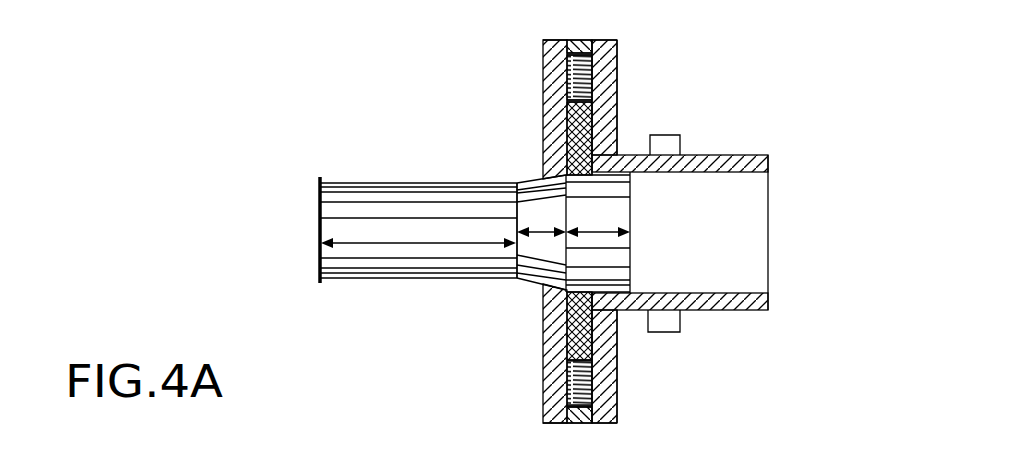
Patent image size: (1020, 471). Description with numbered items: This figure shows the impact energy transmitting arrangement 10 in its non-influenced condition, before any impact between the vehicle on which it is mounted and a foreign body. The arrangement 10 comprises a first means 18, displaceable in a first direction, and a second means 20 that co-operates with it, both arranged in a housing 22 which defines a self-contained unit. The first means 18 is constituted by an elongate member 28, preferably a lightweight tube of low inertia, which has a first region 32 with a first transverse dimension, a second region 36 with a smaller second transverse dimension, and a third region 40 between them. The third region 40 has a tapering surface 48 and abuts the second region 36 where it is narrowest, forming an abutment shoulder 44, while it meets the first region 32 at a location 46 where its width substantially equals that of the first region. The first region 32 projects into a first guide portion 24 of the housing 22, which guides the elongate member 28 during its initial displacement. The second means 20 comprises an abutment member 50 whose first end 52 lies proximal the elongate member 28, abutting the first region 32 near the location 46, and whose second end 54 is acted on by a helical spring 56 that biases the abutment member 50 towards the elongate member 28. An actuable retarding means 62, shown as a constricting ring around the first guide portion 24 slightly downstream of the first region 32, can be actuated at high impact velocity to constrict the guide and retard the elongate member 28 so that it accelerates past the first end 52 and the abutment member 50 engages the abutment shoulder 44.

The impact energy transmitting arrangement 10 is at (206, 129).
The first means 18 is at (312, 262).
The second means 20 is at (557, 119).
The housing 22 is at (623, 399).
The first guide portion 24 is at (733, 155).
The elongate member 28 is at (383, 188).
The first region 32 is at (617, 215).
The second region 36 is at (418, 230).
The third region 40 is at (510, 229).
The abutment shoulder 44 is at (517, 180).
The location 46 is at (543, 262).
The surface 48 is at (539, 181).
The abutment member 50 is at (618, 152).
The first end 52 is at (618, 312).
The second end 54 is at (607, 89).
The helical spring 56 is at (599, 78).
The actuable retarding means 62 is at (670, 143).